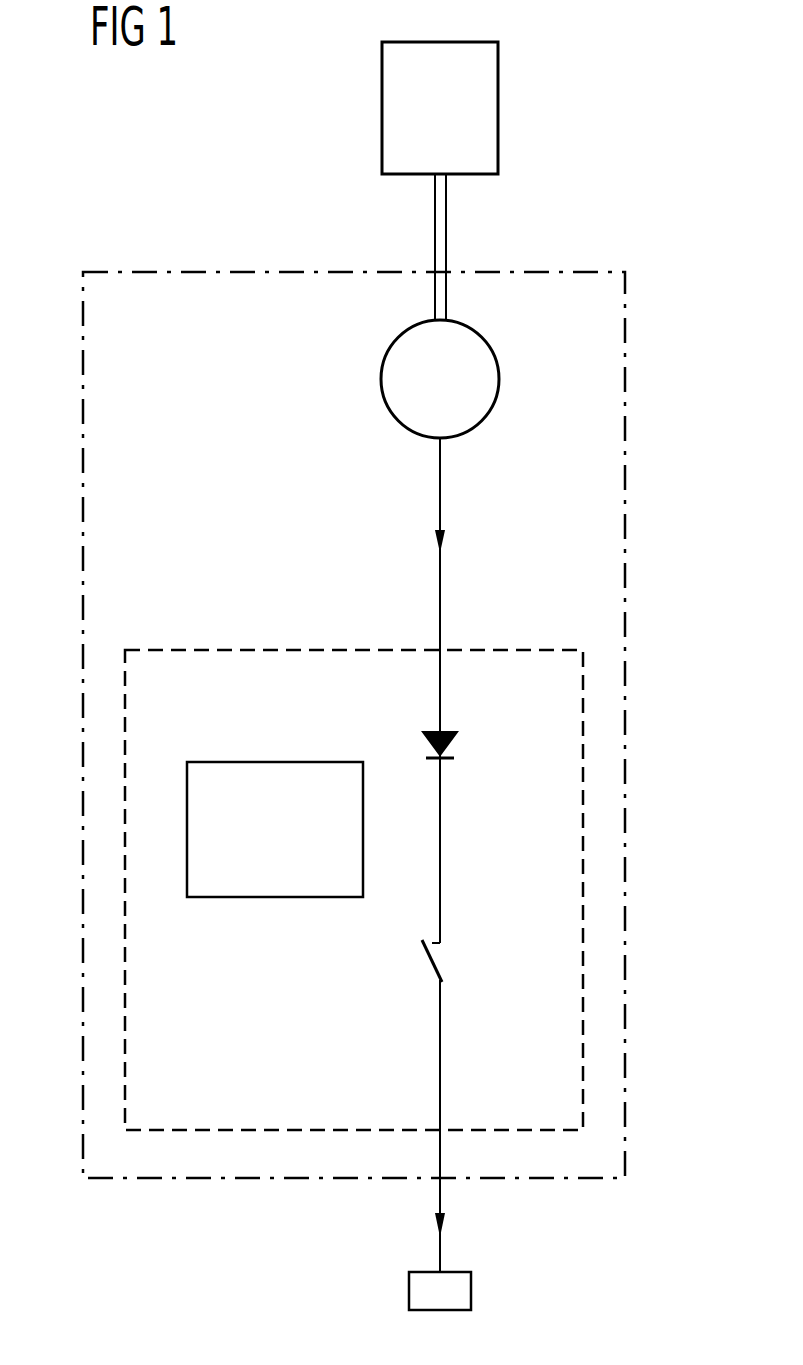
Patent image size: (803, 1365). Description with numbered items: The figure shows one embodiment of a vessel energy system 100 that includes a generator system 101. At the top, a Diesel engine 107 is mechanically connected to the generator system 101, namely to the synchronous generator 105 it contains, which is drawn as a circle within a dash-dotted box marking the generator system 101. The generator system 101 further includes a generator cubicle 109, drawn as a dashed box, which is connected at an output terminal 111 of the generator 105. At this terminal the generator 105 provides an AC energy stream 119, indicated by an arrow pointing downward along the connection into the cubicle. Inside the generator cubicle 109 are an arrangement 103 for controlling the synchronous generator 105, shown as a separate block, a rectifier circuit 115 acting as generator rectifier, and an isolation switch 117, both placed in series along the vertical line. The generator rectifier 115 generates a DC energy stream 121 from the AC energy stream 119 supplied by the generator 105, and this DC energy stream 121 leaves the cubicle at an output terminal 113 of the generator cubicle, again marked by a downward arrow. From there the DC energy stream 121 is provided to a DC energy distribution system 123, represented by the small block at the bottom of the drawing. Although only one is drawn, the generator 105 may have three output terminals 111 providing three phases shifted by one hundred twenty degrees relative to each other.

The vessel energy system 100 is at (596, 72).
The generator system 101 is at (253, 272).
The arrangement for controlling the synchronous generator 103 is at (277, 762).
The synchronous generator 105 is at (380, 378).
The Diesel engine 107 is at (382, 107).
The generator cubicle 109 is at (300, 650).
The output terminal of the generator 111 is at (445, 438).
The output terminal of the generator cubicle 113 is at (442, 1130).
The rectifier circuit 115 is at (450, 744).
The isolation switch 117 is at (428, 960).
The AC energy stream 119 is at (440, 556).
The DC energy stream 121 is at (440, 1237).
The DC energy distribution system 123 is at (409, 1290).